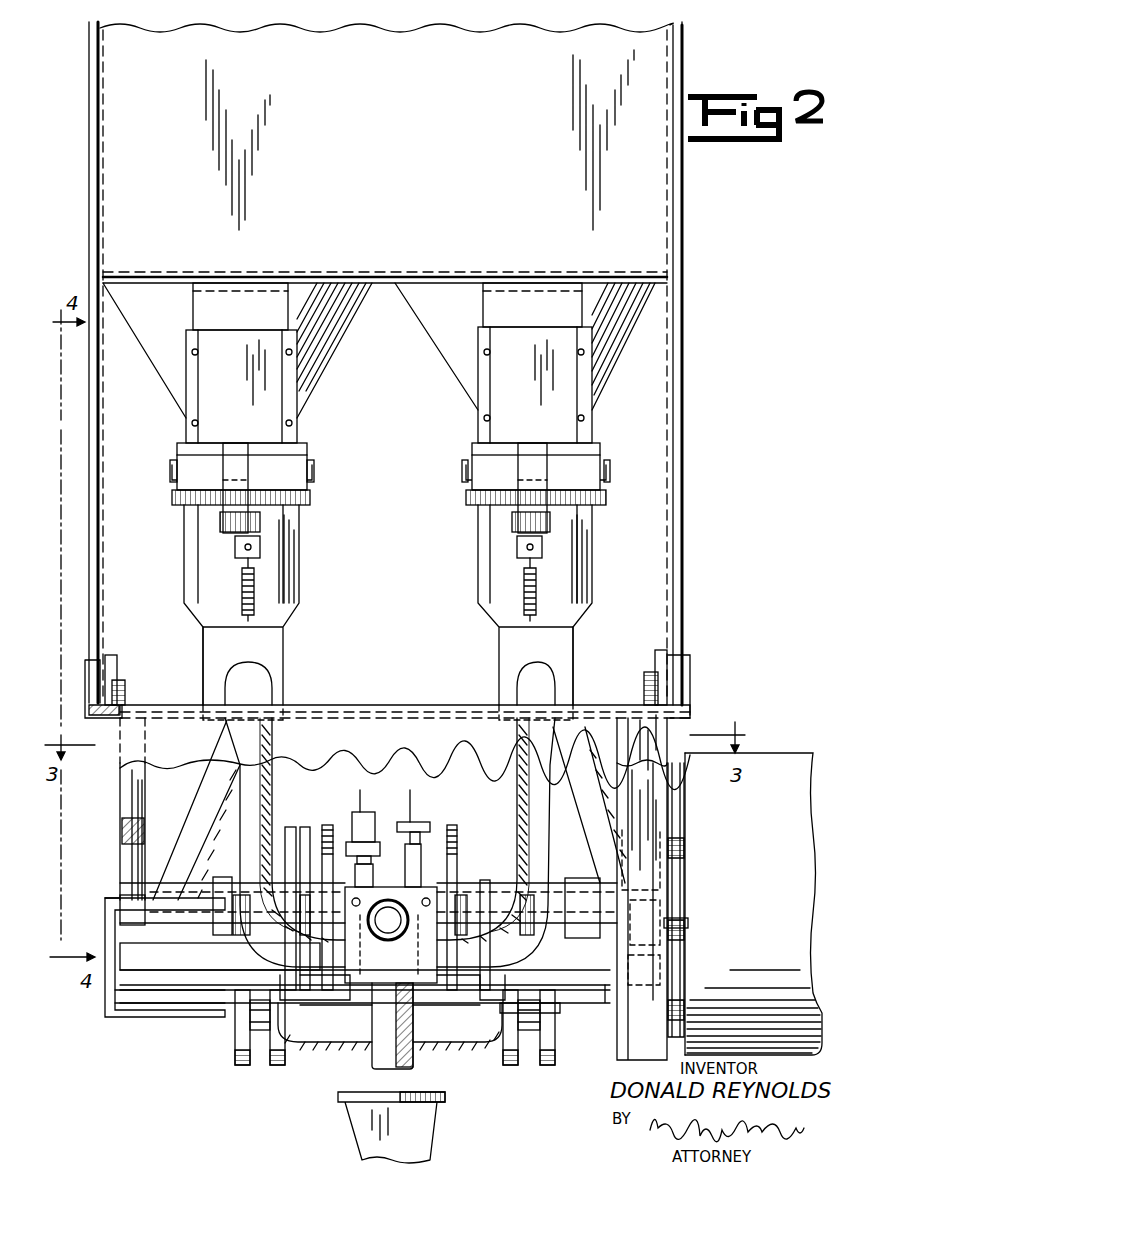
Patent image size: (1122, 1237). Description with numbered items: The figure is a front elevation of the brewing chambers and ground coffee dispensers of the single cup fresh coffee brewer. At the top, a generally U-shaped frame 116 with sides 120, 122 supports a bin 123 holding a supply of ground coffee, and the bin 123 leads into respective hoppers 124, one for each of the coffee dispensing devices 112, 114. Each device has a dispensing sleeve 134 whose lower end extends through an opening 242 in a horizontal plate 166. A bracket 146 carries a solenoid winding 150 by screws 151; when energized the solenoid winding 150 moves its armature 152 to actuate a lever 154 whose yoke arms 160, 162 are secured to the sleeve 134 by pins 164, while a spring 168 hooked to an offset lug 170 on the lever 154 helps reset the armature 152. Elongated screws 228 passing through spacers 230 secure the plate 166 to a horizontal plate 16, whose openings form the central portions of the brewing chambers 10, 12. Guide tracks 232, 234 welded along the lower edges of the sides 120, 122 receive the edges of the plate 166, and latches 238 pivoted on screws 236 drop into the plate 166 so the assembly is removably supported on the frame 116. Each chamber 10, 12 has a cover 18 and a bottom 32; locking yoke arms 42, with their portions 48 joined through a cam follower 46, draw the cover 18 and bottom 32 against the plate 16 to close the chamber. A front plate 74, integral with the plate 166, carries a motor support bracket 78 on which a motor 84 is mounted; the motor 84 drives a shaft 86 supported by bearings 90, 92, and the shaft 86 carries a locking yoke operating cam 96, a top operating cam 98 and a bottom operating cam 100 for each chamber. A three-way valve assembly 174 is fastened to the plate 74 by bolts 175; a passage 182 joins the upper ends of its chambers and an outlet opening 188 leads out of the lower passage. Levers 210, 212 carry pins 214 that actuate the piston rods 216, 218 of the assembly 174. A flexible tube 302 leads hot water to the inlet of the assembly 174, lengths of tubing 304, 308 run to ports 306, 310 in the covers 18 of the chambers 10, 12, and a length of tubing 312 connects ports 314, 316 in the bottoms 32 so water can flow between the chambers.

The brewing chamber 10 is at (110, 890).
The brewing chamber 12 is at (602, 822).
The horizontal plate 16 is at (178, 960).
The cover 18 is at (674, 952).
The bottom 32 is at (188, 984).
The locking yoke arms 42 is at (104, 1000).
The cam follower 46 is at (262, 1038).
The portions of the arms 48 is at (232, 1066).
The front plate 74 is at (120, 770).
The motor support bracket 78 is at (654, 806).
The motor 84 is at (784, 752).
The shaft 86 is at (592, 850).
The bearing 90 is at (208, 882).
The bearing 92 is at (600, 878).
The locking yoke operating cam 96 is at (248, 982).
The top operating cam 98 is at (290, 825).
The bottom operating cam 100 is at (326, 825).
The coffee dispensing device 112 is at (178, 576).
The coffee dispensing device 114 is at (600, 562).
The U-shaped frame 116 is at (712, 458).
The side 120 is at (96, 502).
The side 122 is at (686, 498).
The bin 123 is at (101, 195).
The hopper 124 is at (325, 343).
The dispensing sleeve 134 is at (288, 558).
The bracket 146 is at (275, 278).
The solenoid winding 150 is at (298, 400).
The screws 151 is at (192, 352).
The armature 152 is at (254, 428).
The lever 154 is at (218, 518).
The yoke arm 160 is at (172, 470).
The yoke arm 162 is at (308, 452).
The pins 164 is at (170, 468).
The horizontal plate 166 is at (398, 704).
The spring 168 is at (256, 594).
The offset lug 170 is at (260, 540).
The three-way valve assembly 174 is at (325, 1088).
The bolts 175 is at (310, 825).
The passage 182 is at (198, 882).
The outlet opening 188 is at (372, 1075).
The lever 210 is at (364, 812).
The lever 212 is at (418, 818).
The pin 214 is at (362, 790).
The rod 216 is at (374, 864).
The rod 218 is at (408, 874).
The elongated screws 228 is at (142, 824).
The spacers 230 is at (142, 784).
The guide track 232 is at (88, 704).
The guide track 234 is at (690, 670).
The screws 236 is at (124, 680).
The latches 238 is at (114, 664).
The openings 242 is at (285, 704).
The flexible tube 302 is at (392, 955).
The length of flexible tubing 304 is at (272, 746).
The port 306 is at (182, 958).
The length of tubing 308 is at (526, 734).
The port 310 is at (688, 921).
The length of tubing 312 is at (444, 1048).
The port 314 is at (336, 956).
The port 316 is at (482, 956).